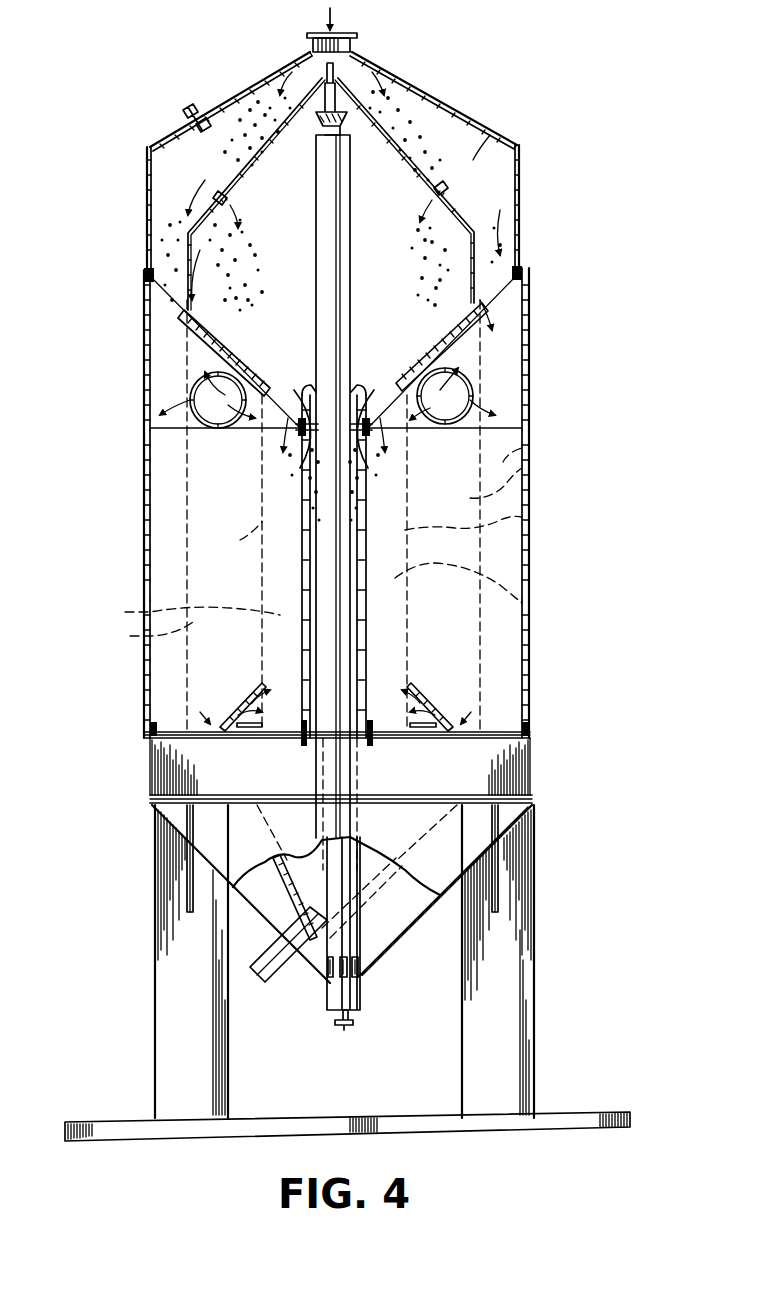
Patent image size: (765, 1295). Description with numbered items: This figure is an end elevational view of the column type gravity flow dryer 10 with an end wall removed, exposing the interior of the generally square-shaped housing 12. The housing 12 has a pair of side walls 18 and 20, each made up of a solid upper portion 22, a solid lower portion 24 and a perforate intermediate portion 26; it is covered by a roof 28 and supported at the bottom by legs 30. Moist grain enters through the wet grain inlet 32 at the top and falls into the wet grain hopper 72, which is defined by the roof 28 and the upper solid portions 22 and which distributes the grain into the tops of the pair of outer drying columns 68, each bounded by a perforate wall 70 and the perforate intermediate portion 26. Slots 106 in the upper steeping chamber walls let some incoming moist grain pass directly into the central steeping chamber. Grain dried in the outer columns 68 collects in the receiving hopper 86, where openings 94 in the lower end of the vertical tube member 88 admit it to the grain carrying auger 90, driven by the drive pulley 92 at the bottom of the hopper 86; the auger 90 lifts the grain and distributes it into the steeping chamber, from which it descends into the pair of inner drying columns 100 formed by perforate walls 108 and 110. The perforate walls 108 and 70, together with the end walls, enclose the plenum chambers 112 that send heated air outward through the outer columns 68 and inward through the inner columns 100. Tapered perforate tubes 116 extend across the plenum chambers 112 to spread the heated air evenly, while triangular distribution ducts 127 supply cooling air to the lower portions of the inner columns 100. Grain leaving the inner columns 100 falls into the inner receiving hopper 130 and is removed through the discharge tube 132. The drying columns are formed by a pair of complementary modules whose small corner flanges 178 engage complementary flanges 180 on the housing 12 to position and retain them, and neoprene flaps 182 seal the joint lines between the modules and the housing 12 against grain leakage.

The dryer 10 is at (460, 66).
The housing 12 is at (345, 395).
The side wall 18 is at (528, 338).
The side wall 20 is at (146, 350).
The upper solid portion 22 is at (147, 216).
The lower solid portion 24 is at (148, 688).
The perforate intermediate portion 26 is at (146, 540).
The roof 28 is at (466, 112).
The legs 30 is at (157, 950).
The wet grain inlet 32 is at (345, 35).
The outer drying columns 68 is at (158, 470).
The perforate wall 70 is at (530, 467).
The wet grain hopper 72 is at (495, 135).
The receiving hopper 86 is at (382, 945).
The tube member 88 is at (358, 920).
The grain carrying auger 90 is at (350, 113).
The drive pulley 92 is at (347, 1026).
The openings 94 is at (355, 977).
The inner drying columns 100 is at (540, 611).
The slots 106 is at (222, 195).
The perforate wall 108 is at (552, 517).
The perforate wall 110 is at (302, 600).
The plenum chambers 112 is at (206, 508).
The tapered perforate tubes 116 is at (190, 400).
The distribution ducts 127 is at (245, 705).
The inner receiving hopper 130 is at (366, 860).
The discharge tube 132 is at (284, 980).
The flanges 178 is at (300, 468).
The complementary flanges 180 is at (305, 388).
The neoprene flaps 182 is at (150, 266).